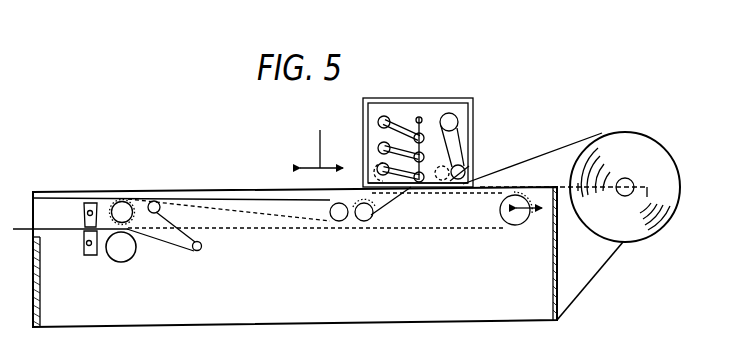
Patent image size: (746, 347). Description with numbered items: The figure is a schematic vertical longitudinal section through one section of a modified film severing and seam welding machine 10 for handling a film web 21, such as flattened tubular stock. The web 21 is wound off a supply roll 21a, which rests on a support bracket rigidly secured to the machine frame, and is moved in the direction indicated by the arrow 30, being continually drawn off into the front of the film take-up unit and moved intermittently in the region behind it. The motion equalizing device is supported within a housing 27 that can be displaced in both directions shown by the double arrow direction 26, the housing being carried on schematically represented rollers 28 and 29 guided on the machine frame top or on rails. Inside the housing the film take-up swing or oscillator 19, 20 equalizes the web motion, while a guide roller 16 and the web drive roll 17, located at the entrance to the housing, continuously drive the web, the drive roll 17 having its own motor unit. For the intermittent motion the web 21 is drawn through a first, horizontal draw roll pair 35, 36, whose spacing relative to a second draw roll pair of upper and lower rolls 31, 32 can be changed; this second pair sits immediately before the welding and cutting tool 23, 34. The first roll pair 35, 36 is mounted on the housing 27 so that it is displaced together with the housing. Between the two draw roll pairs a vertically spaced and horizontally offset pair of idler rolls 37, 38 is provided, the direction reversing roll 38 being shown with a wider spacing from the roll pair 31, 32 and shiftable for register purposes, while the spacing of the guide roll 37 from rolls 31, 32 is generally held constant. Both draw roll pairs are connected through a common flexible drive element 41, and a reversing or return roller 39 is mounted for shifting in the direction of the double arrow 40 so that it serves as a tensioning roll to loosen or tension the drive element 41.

The film severing and seam welding machine 10 is at (238, 187).
The film web 21 is at (262, 199).
The supply roll 21a is at (655, 167).
The welding and cutting tool 23 is at (91, 227).
The welding and cutting tool 34 is at (88, 242).
The upper draw roll 31 is at (122, 201).
The lower draw roll 32 is at (118, 255).
The idler roll 37 is at (157, 202).
The direction reversing idler roll 38 is at (200, 250).
The draw roll 35 is at (338, 221).
The draw roll 36 is at (364, 222).
The common flexible drive element 41 is at (428, 231).
The fixed idler or guide roller 16 is at (383, 116).
The web drive roll 17 is at (463, 190).
The roller 28 is at (365, 133).
The double arrow direction 26 is at (321, 137).
The housing 27 is at (419, 116).
The film take-up swing or oscillator 20 is at (421, 133).
The film take-up swing or oscillator 19 is at (441, 115).
The roller 29 is at (466, 168).
The arrow 30 is at (523, 158).
The reversing or return roller 39 is at (513, 218).
The double arrow 40 is at (531, 215).